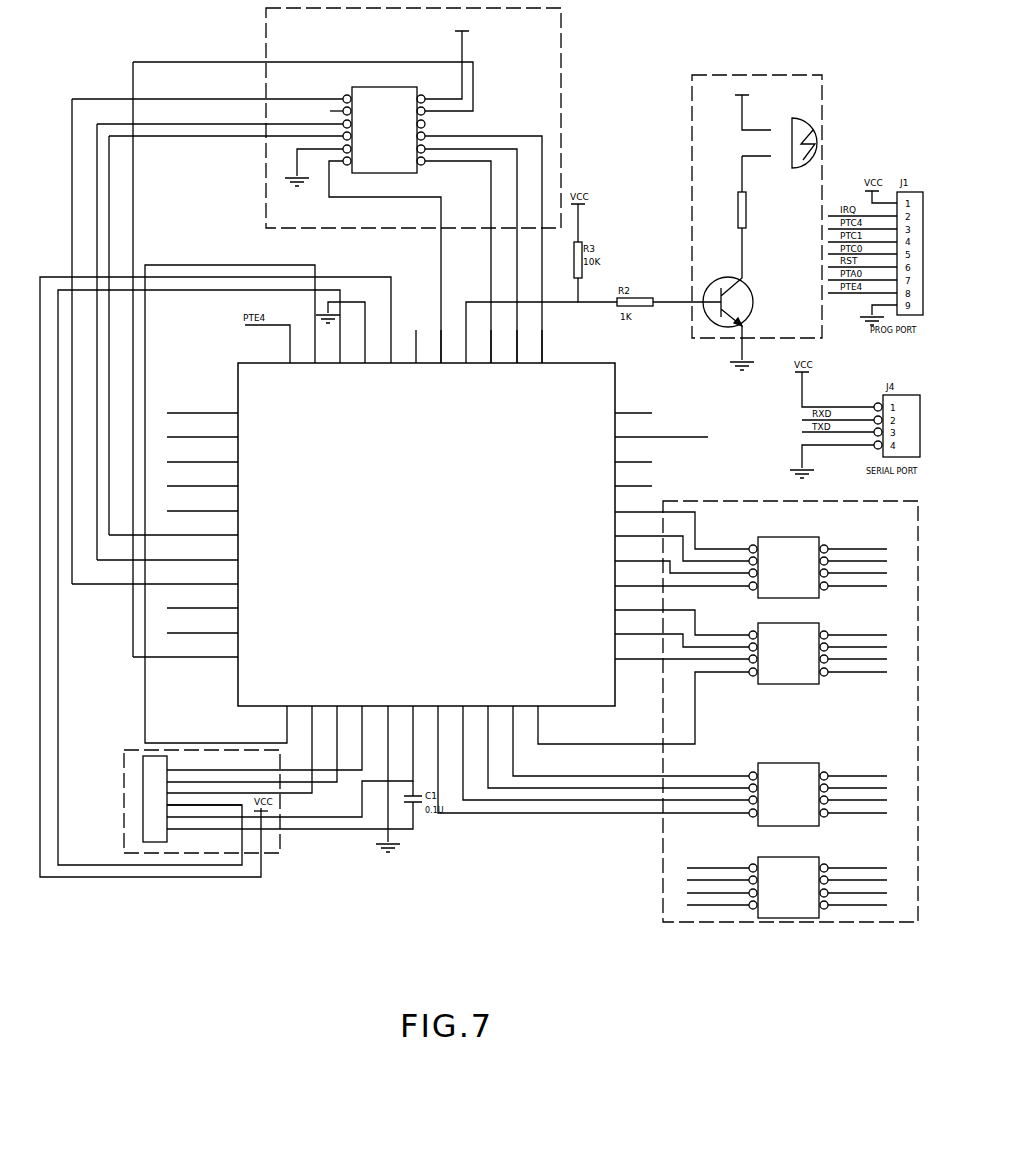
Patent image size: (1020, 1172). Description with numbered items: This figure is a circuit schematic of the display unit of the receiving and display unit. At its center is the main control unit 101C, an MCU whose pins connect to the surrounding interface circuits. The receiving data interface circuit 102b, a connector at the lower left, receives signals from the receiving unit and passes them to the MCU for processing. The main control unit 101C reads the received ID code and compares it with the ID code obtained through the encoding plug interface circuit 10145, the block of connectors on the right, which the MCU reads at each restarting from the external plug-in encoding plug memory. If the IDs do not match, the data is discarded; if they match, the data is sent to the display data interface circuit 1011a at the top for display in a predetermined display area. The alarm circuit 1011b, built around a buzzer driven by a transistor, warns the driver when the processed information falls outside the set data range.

The display data interface circuit 1011a is at (512, 85).
The alarm circuit 1011b is at (798, 124).
The main control unit 101C is at (562, 700).
The encoding plug interface circuit 10145 is at (662, 835).
The receiving data interface circuit 102b is at (155, 830).